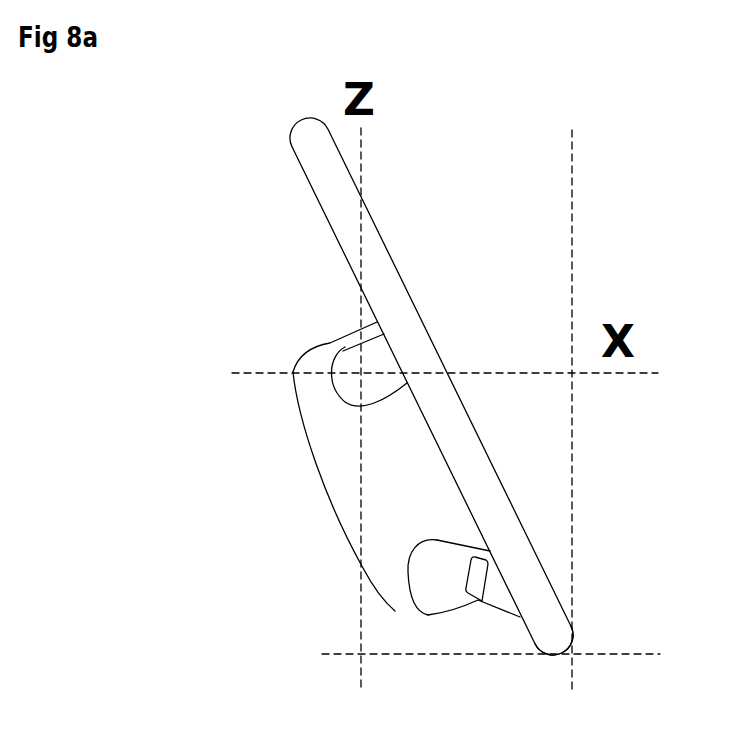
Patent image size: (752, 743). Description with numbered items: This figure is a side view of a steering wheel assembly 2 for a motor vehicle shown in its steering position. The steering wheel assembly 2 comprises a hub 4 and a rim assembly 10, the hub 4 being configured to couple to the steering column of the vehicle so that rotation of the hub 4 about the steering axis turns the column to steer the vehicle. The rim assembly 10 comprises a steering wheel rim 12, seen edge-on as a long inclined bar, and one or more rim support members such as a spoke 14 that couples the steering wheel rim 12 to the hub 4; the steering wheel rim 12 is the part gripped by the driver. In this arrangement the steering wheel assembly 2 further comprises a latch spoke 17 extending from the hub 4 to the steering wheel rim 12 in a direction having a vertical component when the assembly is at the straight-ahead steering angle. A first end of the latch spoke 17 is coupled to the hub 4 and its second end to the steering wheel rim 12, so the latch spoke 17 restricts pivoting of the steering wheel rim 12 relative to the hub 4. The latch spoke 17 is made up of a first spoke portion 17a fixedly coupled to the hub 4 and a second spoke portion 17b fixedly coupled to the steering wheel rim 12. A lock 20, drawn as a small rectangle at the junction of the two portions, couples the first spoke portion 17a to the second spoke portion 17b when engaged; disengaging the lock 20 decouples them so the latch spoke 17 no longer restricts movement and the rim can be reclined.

The steering wheel assembly 2 is at (480, 353).
The hub 4 is at (393, 502).
The rim assembly 10 is at (483, 396).
The steering wheel rim 12 is at (548, 612).
The spoke 14 is at (355, 353).
The latch spoke 17 is at (442, 640).
The first spoke portion 17a is at (423, 578).
The second spoke portion 17b is at (497, 600).
The lock 20 is at (458, 648).